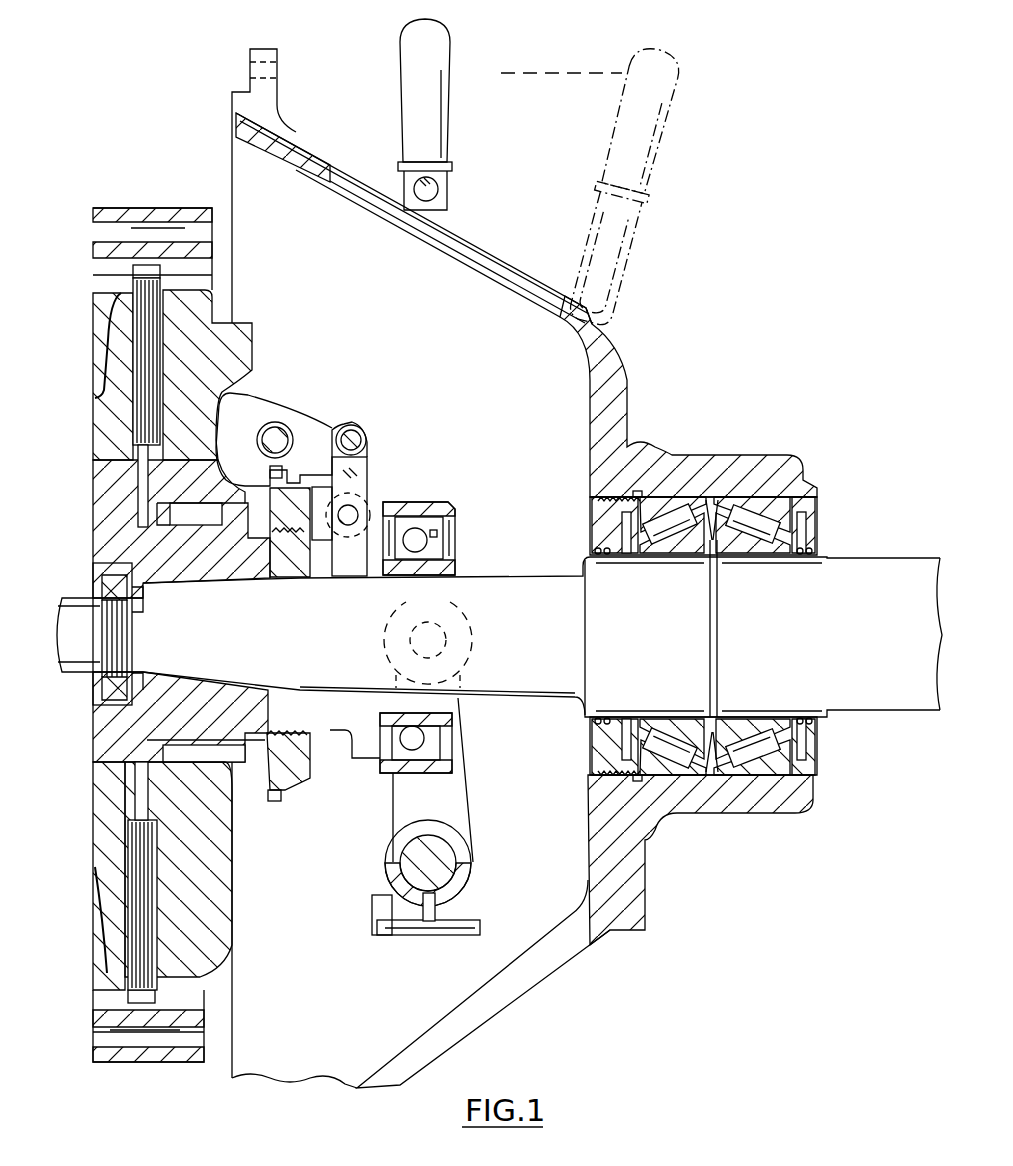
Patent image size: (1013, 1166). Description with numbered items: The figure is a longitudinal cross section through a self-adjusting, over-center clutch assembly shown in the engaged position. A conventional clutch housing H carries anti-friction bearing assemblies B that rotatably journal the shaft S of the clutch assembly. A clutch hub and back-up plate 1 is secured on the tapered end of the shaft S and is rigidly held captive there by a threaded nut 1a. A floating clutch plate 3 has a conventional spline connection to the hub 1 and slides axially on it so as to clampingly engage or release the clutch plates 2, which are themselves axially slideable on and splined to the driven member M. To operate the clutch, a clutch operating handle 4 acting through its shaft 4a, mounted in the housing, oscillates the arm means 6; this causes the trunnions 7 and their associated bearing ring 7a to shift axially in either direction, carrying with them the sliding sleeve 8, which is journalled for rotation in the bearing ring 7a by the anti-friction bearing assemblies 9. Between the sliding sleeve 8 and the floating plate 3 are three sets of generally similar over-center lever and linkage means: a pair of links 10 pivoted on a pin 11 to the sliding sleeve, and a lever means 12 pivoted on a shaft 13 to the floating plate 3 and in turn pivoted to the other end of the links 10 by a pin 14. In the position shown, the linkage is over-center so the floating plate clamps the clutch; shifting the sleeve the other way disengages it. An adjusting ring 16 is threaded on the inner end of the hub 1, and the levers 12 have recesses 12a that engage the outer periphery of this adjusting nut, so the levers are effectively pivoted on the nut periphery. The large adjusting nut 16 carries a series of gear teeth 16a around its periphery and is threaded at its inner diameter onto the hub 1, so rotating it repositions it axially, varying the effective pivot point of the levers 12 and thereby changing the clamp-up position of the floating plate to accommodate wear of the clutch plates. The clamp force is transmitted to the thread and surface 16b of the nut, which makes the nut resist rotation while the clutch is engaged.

The driven member M is at (145, 180).
The clutch hub and back-up plate 1 is at (102, 427).
The threaded nut 1a is at (107, 687).
The clutch plates 2 is at (147, 316).
The floating clutch plate 3 is at (207, 315).
The clutch operating handle 4 is at (443, 100).
The shaft 4a is at (448, 862).
The arm means 6 is at (470, 793).
The trunnions 7 is at (428, 618).
The bearing ring 7a is at (437, 502).
The sliding sleeve 8 is at (362, 723).
The anti-friction bearing assemblies 9 is at (437, 538).
The links 10 is at (367, 457).
The pin 11 is at (356, 510).
The lever means 12 is at (253, 403).
The recesses 12a is at (283, 467).
The shaft 13 is at (277, 437).
The pin 14 is at (357, 432).
The adjusting ring 16 is at (302, 777).
The gear teeth 16a is at (273, 803).
The surface 16b is at (268, 522).
The anti-friction bearing assemblies B is at (750, 508).
The clutch housing H is at (617, 358).
The shaft S is at (530, 648).